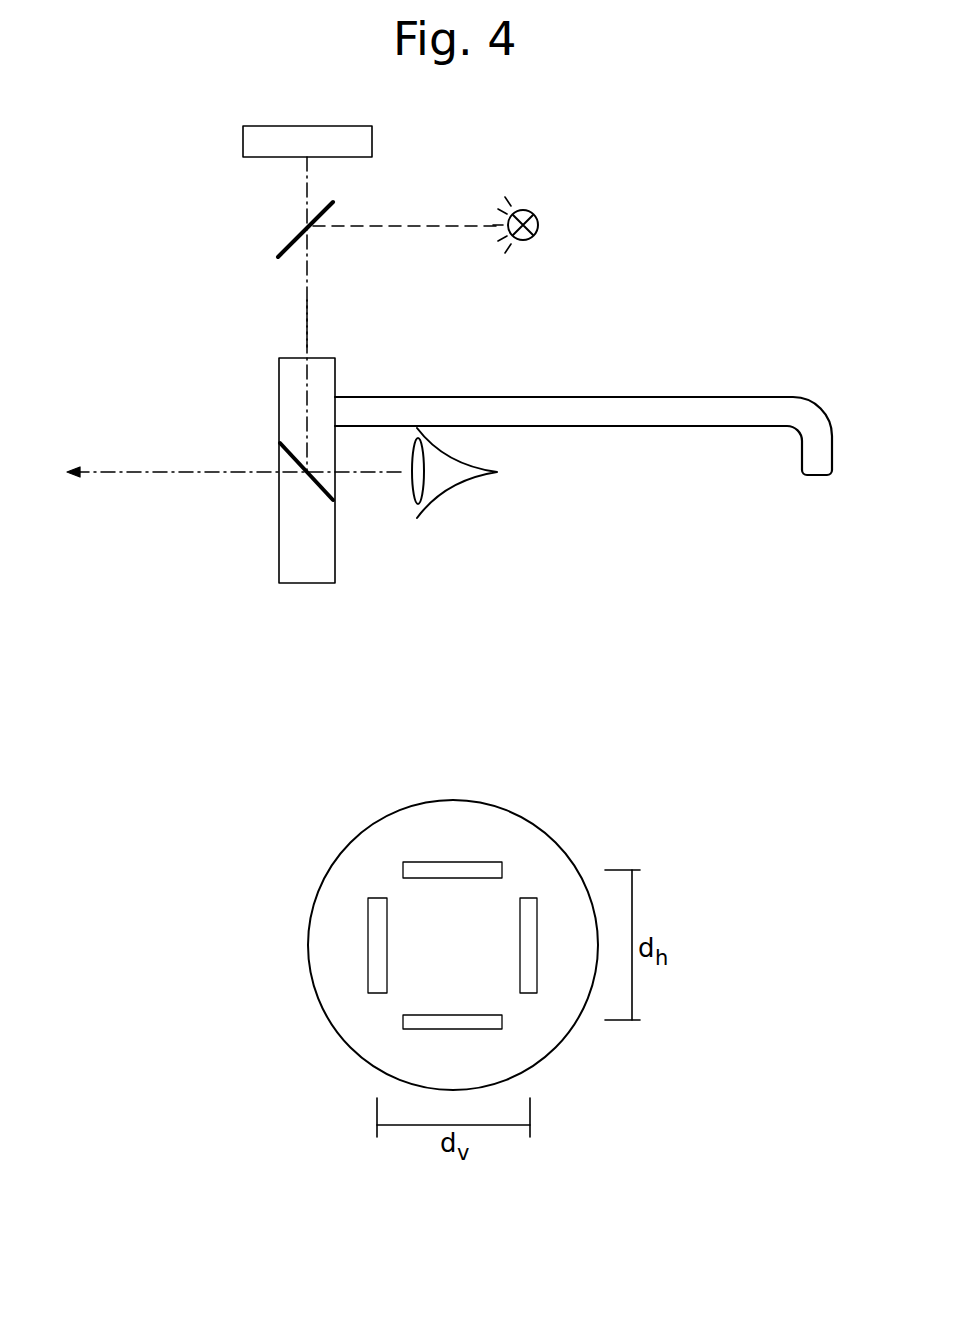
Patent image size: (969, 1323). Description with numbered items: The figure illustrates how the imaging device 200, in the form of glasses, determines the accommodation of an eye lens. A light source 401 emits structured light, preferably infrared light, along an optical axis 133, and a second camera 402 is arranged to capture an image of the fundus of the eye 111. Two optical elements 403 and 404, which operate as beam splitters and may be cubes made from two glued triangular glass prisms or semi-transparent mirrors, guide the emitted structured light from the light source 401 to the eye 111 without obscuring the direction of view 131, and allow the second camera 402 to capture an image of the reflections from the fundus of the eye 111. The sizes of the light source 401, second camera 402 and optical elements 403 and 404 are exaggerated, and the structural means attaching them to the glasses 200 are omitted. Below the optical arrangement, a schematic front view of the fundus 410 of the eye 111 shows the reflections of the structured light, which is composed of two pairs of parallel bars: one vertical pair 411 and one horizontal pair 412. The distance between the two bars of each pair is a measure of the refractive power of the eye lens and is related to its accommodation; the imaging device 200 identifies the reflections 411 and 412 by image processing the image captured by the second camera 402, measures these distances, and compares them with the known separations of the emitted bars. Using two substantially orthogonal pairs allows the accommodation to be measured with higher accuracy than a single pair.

The second camera 402 is at (373, 139).
The light source 401 is at (534, 214).
The optical element 403 is at (287, 247).
The optical axis 133 is at (307, 326).
The imaging device 200 is at (336, 548).
The optical element 404 is at (318, 487).
The direction of view 131 is at (122, 470).
The eye 111 is at (455, 477).
The fundus 410 is at (358, 835).
The vertical pair of bars 411 is at (368, 940).
The horizontal pair of bars 412 is at (447, 862).